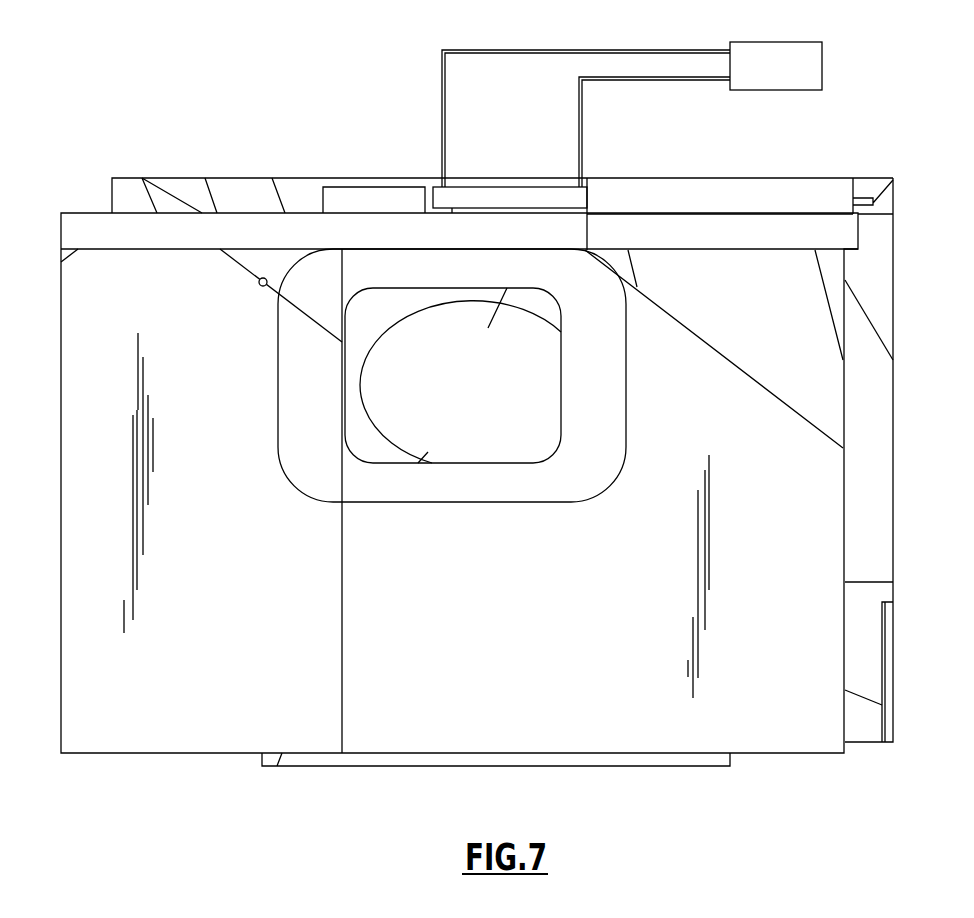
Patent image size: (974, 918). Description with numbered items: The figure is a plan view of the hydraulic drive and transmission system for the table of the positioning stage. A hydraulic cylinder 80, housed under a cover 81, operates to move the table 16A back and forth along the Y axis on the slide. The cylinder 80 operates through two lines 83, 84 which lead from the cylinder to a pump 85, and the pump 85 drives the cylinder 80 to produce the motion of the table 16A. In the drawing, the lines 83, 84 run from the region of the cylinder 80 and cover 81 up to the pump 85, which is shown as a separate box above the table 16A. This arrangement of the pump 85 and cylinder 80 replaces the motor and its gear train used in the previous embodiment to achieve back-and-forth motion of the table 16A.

The table 16A is at (580, 606).
The hydraulic cylinder 80 is at (489, 187).
The cover 81 is at (752, 190).
The line 83 is at (641, 50).
The line 84 is at (583, 117).
The pump 85 is at (790, 82).